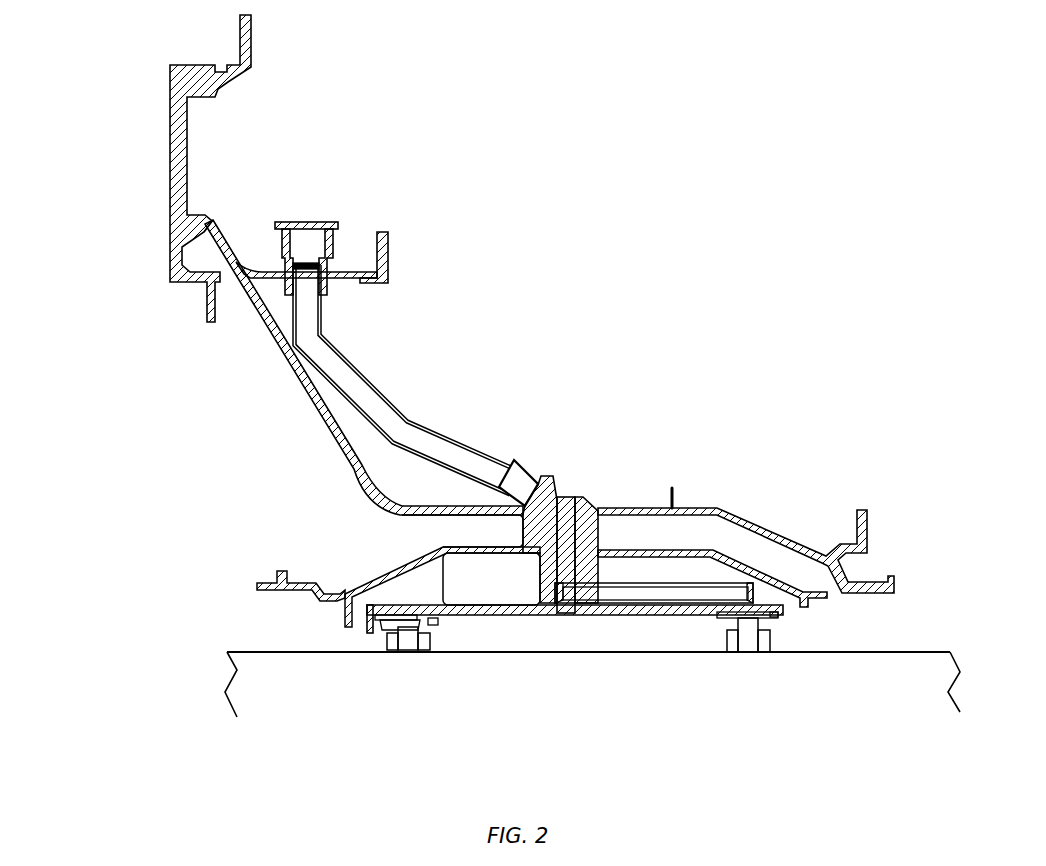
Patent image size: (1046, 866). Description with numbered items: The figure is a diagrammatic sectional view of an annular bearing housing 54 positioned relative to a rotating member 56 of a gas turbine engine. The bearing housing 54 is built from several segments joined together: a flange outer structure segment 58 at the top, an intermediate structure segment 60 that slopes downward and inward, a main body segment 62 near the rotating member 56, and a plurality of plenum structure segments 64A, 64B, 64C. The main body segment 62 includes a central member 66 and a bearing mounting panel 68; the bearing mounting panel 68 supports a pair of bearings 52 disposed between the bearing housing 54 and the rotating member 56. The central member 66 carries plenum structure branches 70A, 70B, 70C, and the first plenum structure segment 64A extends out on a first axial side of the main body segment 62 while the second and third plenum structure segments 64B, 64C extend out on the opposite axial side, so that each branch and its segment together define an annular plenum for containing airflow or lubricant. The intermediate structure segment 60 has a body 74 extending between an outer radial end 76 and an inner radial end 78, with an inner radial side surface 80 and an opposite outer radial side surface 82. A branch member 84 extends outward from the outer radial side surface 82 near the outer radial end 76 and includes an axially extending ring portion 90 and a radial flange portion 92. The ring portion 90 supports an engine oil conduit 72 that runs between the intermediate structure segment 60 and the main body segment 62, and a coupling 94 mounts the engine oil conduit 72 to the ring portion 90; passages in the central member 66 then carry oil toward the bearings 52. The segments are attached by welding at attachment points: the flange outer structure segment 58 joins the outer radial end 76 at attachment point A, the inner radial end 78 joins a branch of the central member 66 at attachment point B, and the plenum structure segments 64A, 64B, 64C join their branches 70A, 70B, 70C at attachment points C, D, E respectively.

The bearing 52 is at (407, 650).
The bearing housing 54 is at (810, 152).
The rotating member 56 is at (876, 691).
The flange outer structure segment 58 is at (137, 71).
The intermediate structure segment 60 is at (223, 445).
The main body segment 62 is at (573, 630).
The first plenum structure segment 64A is at (300, 593).
The second plenum structure segment 64B is at (773, 532).
The third plenum structure segment 64C is at (813, 597).
The central member 66 is at (572, 497).
The bearing mounting panel 68 is at (492, 610).
The first plenum structure branch 70A is at (483, 551).
The second plenum structure branch 70B is at (628, 507).
The third plenum structure branch 70C is at (633, 553).
The engine oil conduit 72 is at (417, 405).
The body 74 is at (297, 440).
The outer radial end 76 is at (222, 233).
The inner radial end 78 is at (455, 507).
The inner radial side surface 80 is at (290, 378).
The outer radial side surface 82 is at (373, 490).
The branch member 84 is at (407, 262).
The ring portion 90 is at (350, 280).
The radial flange portion 92 is at (388, 243).
The coupling 94 is at (330, 222).
The attachment point A is at (222, 233).
The attachment point B is at (457, 517).
The attachment point C is at (427, 558).
The attachment point D is at (655, 507).
The attachment point E is at (697, 550).